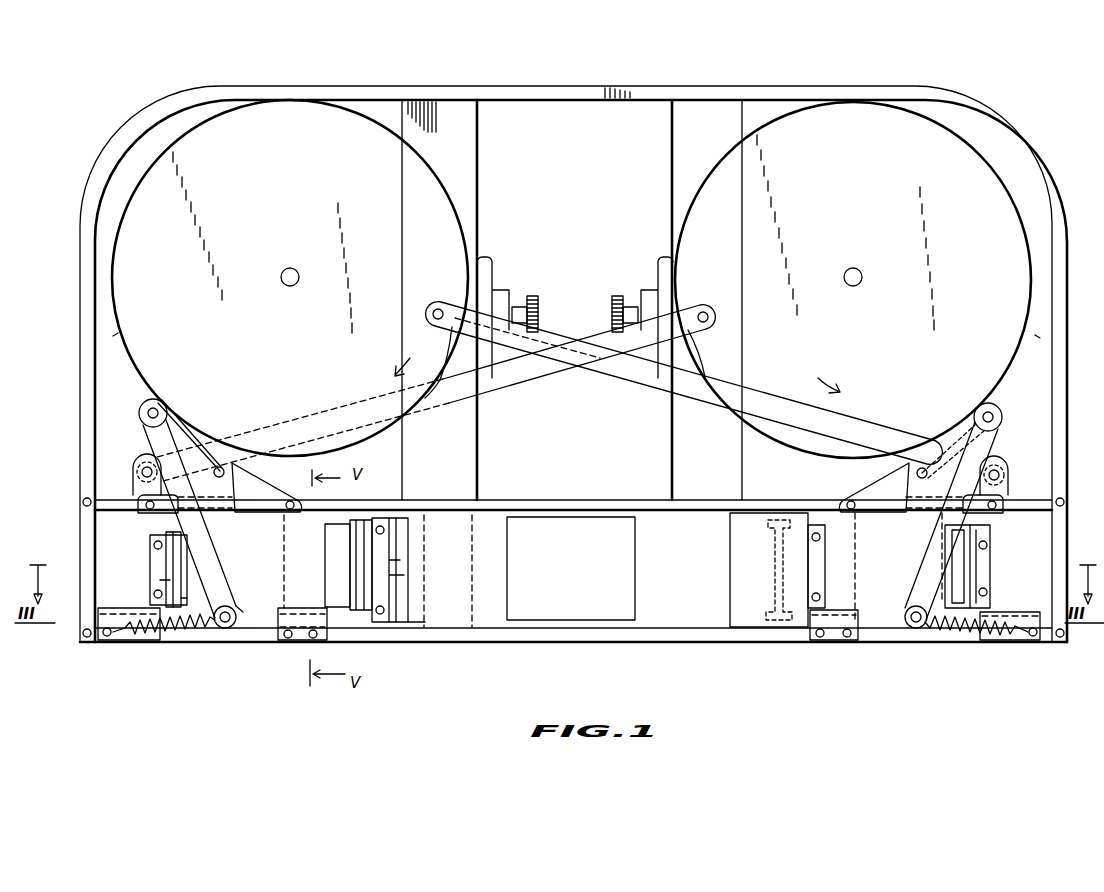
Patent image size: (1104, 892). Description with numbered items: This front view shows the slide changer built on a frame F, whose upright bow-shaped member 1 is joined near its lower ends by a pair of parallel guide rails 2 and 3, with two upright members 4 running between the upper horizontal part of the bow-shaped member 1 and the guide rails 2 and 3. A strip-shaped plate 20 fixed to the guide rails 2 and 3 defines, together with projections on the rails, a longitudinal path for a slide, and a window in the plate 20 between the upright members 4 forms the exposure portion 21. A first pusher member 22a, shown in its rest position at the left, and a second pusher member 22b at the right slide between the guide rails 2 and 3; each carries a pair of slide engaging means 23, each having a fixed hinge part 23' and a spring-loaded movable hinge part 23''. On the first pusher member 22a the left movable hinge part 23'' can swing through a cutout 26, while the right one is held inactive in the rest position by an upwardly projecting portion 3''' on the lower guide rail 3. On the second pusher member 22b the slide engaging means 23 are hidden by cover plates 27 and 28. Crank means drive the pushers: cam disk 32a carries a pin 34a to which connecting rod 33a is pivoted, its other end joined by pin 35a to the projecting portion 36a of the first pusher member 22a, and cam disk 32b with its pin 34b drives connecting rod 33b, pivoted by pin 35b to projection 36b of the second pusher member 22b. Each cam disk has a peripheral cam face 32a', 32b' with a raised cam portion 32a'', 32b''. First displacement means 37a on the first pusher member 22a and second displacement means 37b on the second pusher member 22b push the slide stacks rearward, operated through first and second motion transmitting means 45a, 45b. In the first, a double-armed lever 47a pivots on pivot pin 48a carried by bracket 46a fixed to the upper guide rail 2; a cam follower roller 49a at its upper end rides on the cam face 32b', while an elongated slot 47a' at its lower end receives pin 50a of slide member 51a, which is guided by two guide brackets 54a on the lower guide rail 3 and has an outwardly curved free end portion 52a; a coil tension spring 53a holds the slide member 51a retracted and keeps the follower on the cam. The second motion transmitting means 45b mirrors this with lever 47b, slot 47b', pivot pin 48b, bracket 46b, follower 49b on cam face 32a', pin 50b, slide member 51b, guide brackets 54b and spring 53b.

The upright bow-shaped member 1 is at (512, 77).
The frame F is at (633, 80).
The upper guide rail 2 is at (520, 498).
The lower guide rail 3 is at (457, 651).
The upwardly projecting portion 3''' is at (431, 612).
The upright members 4 is at (478, 165).
The strip-shaped plate 20 is at (462, 594).
The exposure portion 21 is at (563, 525).
The first pusher member 22a is at (322, 563).
The second pusher member 22b is at (890, 559).
The slide engaging means 23 is at (279, 569).
The fixed hinge part 23' is at (130, 538).
The movable hinge part 23'' is at (208, 569).
The cutout 26 is at (186, 598).
The cover plate 27 is at (750, 627).
The cover plate 28 is at (975, 563).
The cam disk 32a is at (856, 280).
The peripheral cam face 32a' is at (1067, 344).
The raised cam portion 32a'' is at (736, 353).
The cam disk 32b is at (285, 278).
The peripheral cam face 32b' is at (73, 343).
The raised cam portion 32b'' is at (451, 374).
The connecting rod 33a is at (548, 372).
The connecting rod 33b is at (606, 370).
The pin 34a is at (730, 300).
The pin 34b is at (433, 314).
The pin 35a is at (148, 462).
The pin 35b is at (1005, 464).
The projecting portion 36a is at (137, 483).
The projection 36b is at (1010, 486).
The first displacement means 37a is at (384, 552).
The second displacement means 37b is at (760, 564).
The first motion transmitting means 45a is at (192, 438).
The second motion transmitting means 45b is at (884, 488).
The bracket 46a is at (292, 478).
The bracket 46b is at (866, 494).
The double-armed lever 47a is at (213, 519).
The elongated slot 47a' is at (256, 590).
The double-armed lever 47b is at (930, 521).
The elongated slot 47b' is at (893, 648).
The pivot pin 48a is at (230, 466).
The pivot pin 48b is at (921, 466).
The cam follower roller 49a is at (141, 404).
The cam follower roller 49b is at (1001, 414).
The pin 50a is at (234, 628).
The pin 50b is at (922, 630).
The slide member 51a is at (270, 630).
The slide member 51b is at (878, 618).
The free end portion 52a is at (338, 630).
The coil tension spring 53a is at (190, 626).
The coil tension spring 53b is at (988, 640).
The guide brackets 54a is at (120, 642).
The guide brackets 54b is at (835, 642).